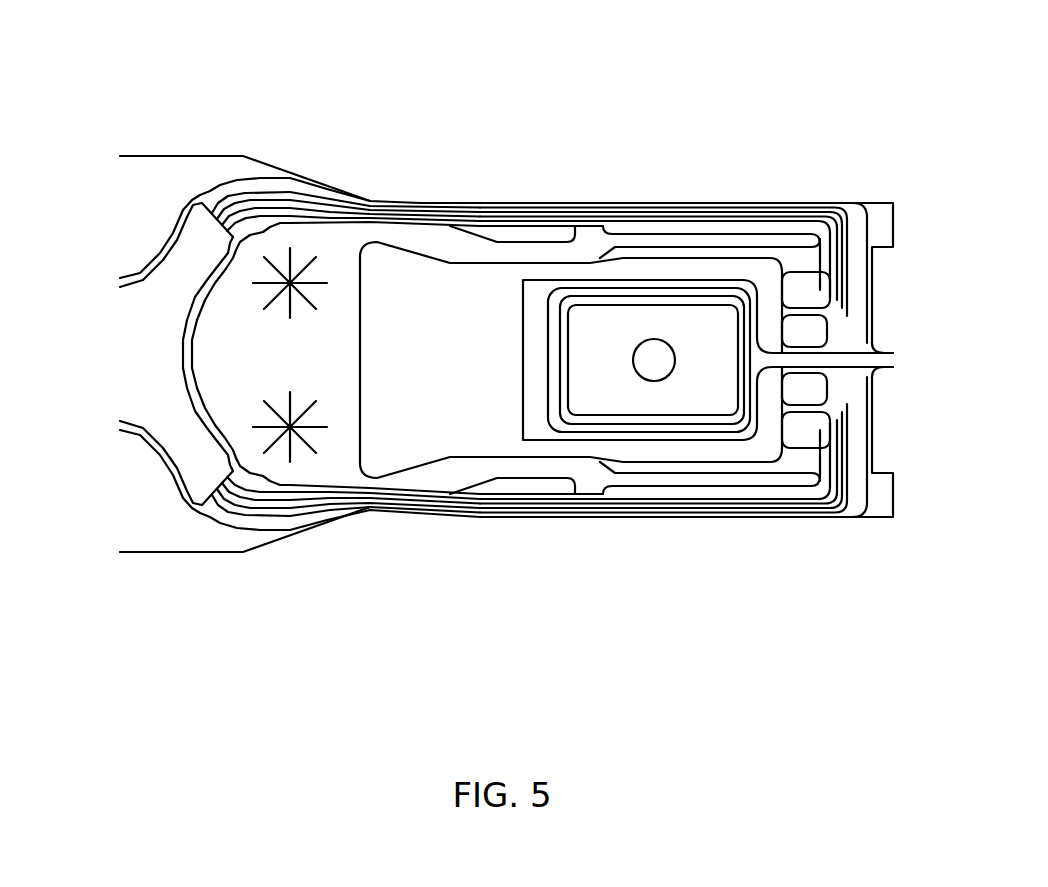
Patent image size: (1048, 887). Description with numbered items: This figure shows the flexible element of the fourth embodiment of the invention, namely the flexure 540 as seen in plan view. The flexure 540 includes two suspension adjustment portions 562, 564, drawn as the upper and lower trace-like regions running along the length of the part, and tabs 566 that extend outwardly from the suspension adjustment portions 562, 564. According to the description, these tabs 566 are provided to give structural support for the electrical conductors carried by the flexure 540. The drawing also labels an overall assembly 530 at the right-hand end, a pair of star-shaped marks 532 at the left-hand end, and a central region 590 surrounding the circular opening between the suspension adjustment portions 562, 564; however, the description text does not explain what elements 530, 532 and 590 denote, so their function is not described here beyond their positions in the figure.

The suspension flexure 530 is at (675, 360).
The alignment features 532 is at (327, 283).
The flexure 540 is at (343, 243).
The suspension adjustment portion 562 is at (690, 248).
The suspension adjustment portion 564 is at (663, 470).
The tabs 566 is at (600, 222).
The slider bonding region 590 is at (520, 366).